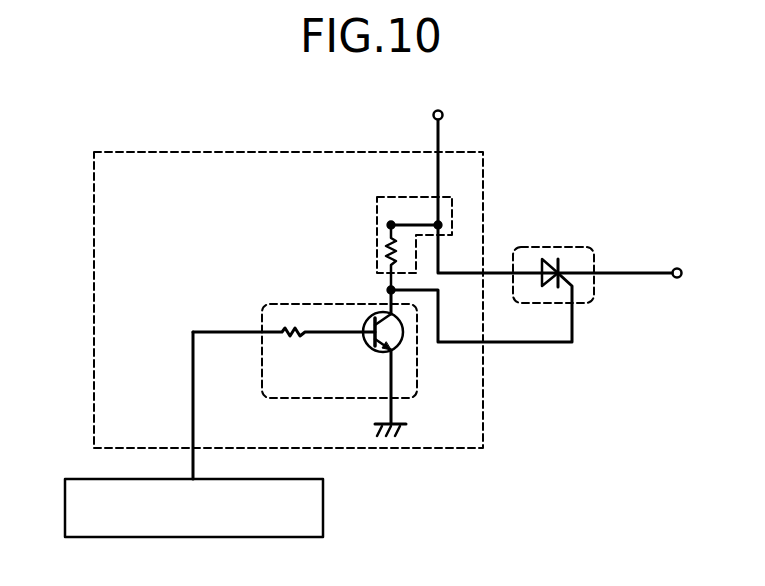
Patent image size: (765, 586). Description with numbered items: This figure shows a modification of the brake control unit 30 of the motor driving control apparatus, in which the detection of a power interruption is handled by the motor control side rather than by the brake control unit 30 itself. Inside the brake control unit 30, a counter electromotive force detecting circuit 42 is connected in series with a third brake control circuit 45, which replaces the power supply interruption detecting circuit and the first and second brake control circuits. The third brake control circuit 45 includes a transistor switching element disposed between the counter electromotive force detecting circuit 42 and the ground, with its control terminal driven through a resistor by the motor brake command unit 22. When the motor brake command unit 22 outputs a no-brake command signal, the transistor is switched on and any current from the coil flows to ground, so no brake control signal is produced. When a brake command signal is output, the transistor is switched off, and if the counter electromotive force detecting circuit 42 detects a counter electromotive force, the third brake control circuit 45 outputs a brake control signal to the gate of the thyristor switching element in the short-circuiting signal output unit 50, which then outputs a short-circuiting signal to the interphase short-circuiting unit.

The brake control unit 30 is at (319, 128).
The counter electromotive force detecting circuit 42 is at (401, 197).
The third brake control circuit 45 is at (294, 304).
The short-circuiting signal output unit 50 is at (577, 247).
The motor brake command unit 22 is at (323, 505).